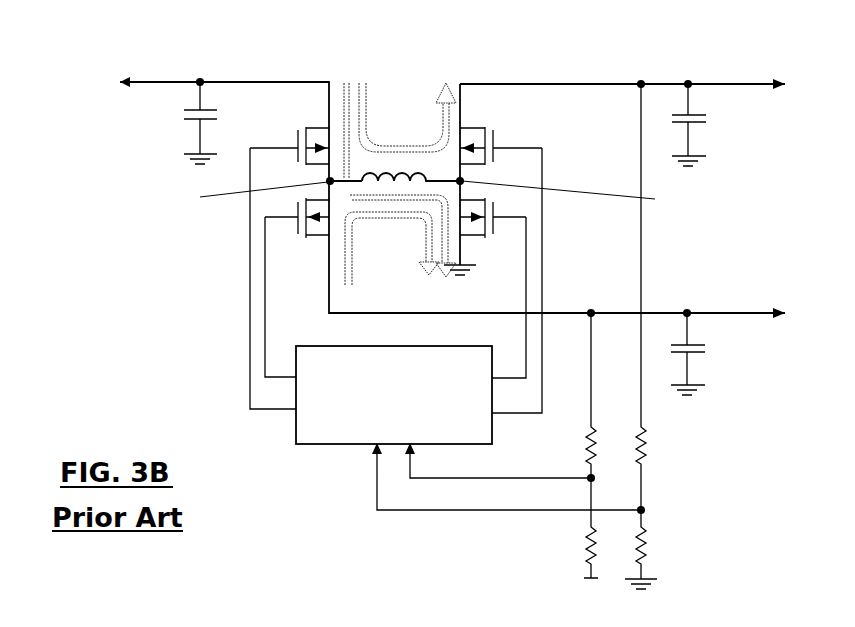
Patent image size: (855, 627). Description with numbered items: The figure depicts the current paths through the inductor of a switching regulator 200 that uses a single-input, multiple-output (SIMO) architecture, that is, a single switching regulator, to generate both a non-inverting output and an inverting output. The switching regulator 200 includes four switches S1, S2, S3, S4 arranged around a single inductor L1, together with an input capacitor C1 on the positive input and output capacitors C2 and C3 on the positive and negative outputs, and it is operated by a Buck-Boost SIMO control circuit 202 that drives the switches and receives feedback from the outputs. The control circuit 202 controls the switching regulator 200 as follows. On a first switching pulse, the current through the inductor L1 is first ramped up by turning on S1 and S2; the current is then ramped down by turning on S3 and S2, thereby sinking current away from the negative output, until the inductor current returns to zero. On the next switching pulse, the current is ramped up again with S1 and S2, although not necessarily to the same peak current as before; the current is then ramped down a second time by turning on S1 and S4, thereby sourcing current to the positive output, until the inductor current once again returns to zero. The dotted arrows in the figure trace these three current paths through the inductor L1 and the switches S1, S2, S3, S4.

The switching regulator 200 is at (101, 48).
The Buck-Boost SIMO control circuit 202 is at (330, 444).
The input capacitor C1 is at (192, 123).
The positive output capacitor C2 is at (696, 125).
The negative output capacitor C3 is at (696, 354).
The inductor L1 is at (395, 168).
The switch S1 is at (289, 144).
The switch S2 is at (493, 218).
The switch S3 is at (297, 218).
The switch S4 is at (501, 144).